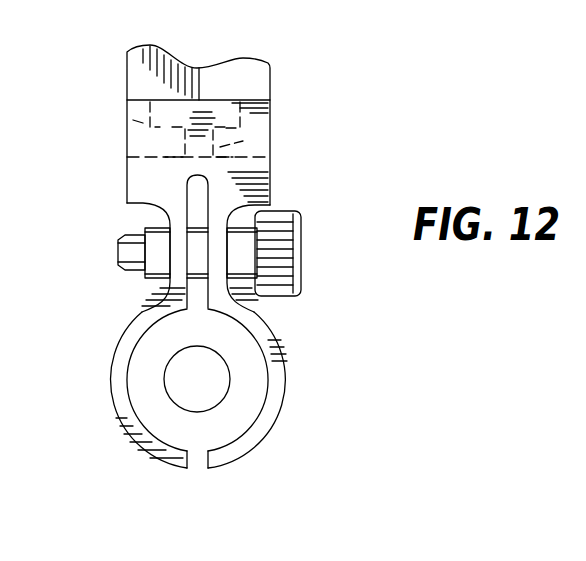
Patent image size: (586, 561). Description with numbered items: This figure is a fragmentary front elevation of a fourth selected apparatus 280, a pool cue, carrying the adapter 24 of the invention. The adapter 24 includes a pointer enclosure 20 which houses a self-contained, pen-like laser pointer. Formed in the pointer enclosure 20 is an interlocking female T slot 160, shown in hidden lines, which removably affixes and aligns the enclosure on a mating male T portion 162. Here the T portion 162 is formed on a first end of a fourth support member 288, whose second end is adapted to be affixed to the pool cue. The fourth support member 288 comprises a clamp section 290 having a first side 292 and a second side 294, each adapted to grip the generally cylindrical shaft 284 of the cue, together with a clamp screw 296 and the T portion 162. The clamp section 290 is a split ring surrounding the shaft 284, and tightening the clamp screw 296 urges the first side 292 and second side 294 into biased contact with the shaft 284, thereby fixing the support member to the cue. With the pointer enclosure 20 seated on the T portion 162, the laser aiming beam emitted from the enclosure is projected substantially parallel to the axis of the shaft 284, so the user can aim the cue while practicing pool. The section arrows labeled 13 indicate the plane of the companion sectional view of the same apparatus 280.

The section line 13- 13 is at (353, 110).
The adapter 24 is at (125, 44).
The pointer enclosure 20 is at (127, 82).
The female T slot 160 is at (127, 120).
The T portion 162 is at (270, 148).
The fourth support member 288 is at (127, 187).
The clamp section 290 is at (126, 330).
The first side 292 is at (109, 404).
The second side 294 is at (288, 412).
The clamp screw 296 is at (295, 297).
The fourth selected apparatus 280 is at (183, 432).
The shaft 284 is at (201, 457).